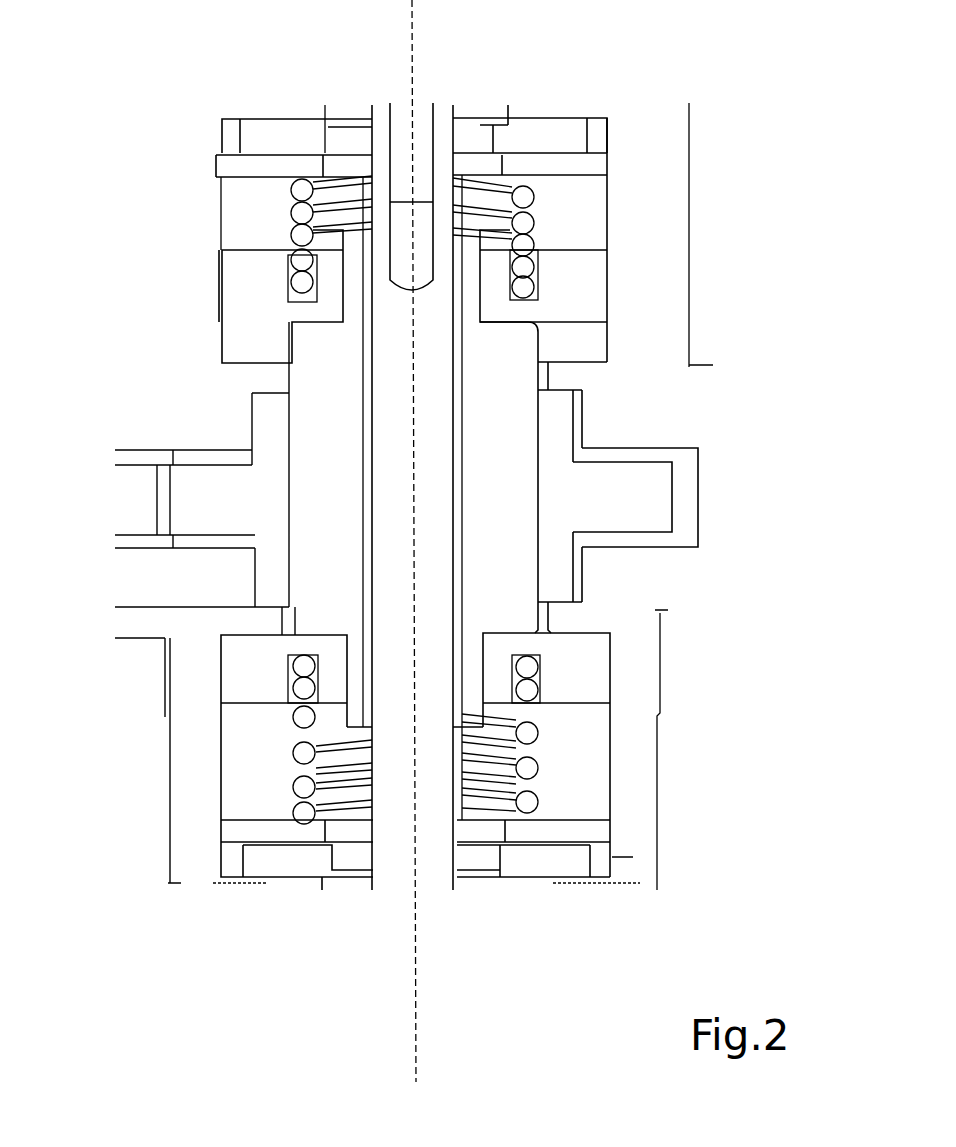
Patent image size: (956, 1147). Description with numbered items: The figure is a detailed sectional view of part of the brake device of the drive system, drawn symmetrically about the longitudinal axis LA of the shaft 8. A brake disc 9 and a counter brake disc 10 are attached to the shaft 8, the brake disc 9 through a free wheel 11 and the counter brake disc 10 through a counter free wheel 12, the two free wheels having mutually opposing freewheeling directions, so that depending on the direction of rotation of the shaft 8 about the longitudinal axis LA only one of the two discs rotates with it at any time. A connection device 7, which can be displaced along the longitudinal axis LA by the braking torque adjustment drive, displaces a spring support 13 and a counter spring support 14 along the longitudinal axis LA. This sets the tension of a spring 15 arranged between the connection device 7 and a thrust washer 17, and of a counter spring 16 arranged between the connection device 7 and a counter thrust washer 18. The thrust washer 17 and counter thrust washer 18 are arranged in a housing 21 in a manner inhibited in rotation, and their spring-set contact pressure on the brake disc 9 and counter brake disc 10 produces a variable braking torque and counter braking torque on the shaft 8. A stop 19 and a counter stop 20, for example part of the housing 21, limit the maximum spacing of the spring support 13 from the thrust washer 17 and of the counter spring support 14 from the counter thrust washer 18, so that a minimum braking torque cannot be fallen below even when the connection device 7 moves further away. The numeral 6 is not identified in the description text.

The housing 6 is at (245, 492).
The connection device 7 is at (500, 421).
The shaft 8 is at (412, 805).
The brake disc 9 is at (260, 123).
The counter brake disc 10 is at (232, 860).
The free wheel 11 is at (347, 123).
The counter free wheel 12 is at (478, 855).
The spring support 13 is at (237, 314).
The counter spring support 14 is at (583, 663).
The spring 15 is at (290, 212).
The counter spring 16 is at (537, 737).
The thrust washer 17 is at (243, 157).
The counter thrust washer 18 is at (593, 830).
The stop 19 is at (567, 373).
The counter stop 20 is at (562, 620).
The housing 21 is at (665, 207).
The longitudinal axis LA is at (420, 1002).